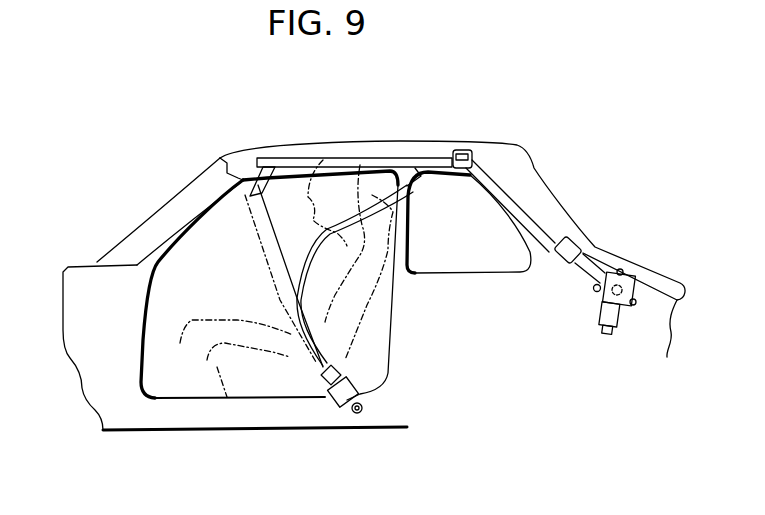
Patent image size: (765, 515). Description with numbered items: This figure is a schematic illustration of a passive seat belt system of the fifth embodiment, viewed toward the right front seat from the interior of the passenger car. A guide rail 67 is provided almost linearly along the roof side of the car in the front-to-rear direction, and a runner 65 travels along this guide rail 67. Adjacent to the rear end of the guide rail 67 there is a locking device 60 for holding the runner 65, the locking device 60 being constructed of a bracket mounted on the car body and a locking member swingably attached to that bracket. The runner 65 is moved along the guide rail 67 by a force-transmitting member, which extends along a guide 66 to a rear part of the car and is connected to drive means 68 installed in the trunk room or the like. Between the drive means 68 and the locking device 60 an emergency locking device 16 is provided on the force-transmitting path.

The locking device 60 is at (463, 146).
The runner 65 is at (401, 157).
The guide 66 is at (527, 203).
The guide rail 67 is at (313, 157).
The emergency locking device 16 is at (572, 240).
The drive means 68 is at (600, 302).